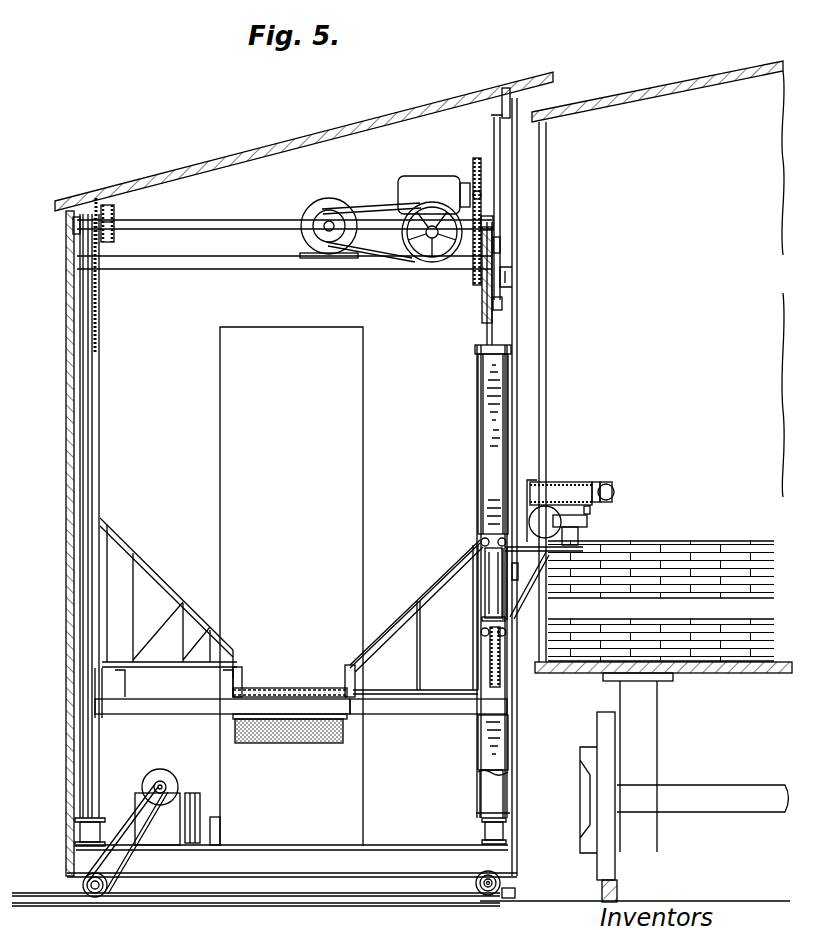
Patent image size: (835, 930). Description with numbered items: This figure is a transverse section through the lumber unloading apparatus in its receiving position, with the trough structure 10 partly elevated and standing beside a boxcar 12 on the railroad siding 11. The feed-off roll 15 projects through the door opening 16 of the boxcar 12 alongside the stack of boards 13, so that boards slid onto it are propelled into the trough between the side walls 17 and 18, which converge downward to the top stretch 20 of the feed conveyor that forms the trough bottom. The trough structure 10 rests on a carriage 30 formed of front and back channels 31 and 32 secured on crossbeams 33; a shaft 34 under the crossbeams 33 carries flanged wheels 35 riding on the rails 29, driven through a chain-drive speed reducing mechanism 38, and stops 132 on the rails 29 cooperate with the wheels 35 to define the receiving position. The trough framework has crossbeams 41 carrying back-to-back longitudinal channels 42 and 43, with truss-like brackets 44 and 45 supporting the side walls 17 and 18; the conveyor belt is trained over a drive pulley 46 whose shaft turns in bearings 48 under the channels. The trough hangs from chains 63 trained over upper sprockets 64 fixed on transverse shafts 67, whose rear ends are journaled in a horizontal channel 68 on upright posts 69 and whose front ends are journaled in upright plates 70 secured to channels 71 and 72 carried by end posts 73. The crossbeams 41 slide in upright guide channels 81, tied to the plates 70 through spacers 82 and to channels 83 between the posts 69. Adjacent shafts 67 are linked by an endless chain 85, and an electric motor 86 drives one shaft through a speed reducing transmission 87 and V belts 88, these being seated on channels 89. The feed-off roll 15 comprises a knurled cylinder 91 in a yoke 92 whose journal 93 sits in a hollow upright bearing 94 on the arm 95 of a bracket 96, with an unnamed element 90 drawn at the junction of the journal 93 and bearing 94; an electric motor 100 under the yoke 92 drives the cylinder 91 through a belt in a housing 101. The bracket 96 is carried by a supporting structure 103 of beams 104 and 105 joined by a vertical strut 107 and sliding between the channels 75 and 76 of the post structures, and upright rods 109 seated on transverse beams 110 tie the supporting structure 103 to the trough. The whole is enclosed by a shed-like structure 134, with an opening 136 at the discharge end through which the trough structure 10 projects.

The trough structure 10 is at (164, 539).
The railroad siding 11 is at (630, 896).
The boxcar 12 is at (702, 82).
The boards 13 is at (714, 546).
The feed-off roll 15 is at (603, 486).
The door opening 16 is at (546, 384).
The side wall 17 is at (118, 541).
The side wall 18 is at (443, 578).
The top stretch 20 is at (290, 680).
The rails 29 is at (197, 905).
The carriage 30 is at (53, 496).
The front channels 31 is at (507, 828).
The back channels 32 is at (75, 831).
The crossbeams 33 is at (295, 850).
The shaft 34 is at (83, 887).
The flanged wheels 35 is at (489, 896).
The chain-drive speed reducing mechanism 38 is at (130, 793).
The crossbeams 41 is at (176, 716).
The longitudinal channel 42 is at (345, 682).
The longitudinal channel 43 is at (240, 677).
The truss-like bracket 44 is at (160, 622).
The truss-like bracket 45 is at (419, 657).
The drive pulley 46 is at (236, 741).
The bearings 48 is at (233, 720).
The chains 63 is at (100, 318).
The upper sprockets 64 is at (96, 202).
The shafts 67 is at (229, 221).
The horizontal channel 68 is at (72, 227).
The upright posts 69 is at (82, 287).
The upright plates 70 is at (494, 224).
The upper channel 71 is at (505, 90).
The channel 72 is at (510, 277).
The end posts 73 is at (494, 133).
The channel 75 is at (484, 381).
The channel 76 is at (476, 350).
The upright channels 81 is at (97, 436).
The spacers 82 is at (500, 243).
The channels 83 is at (76, 304).
The endless chain 85 is at (116, 209).
The electric motor 86 is at (330, 199).
The speed reducing transmission 87 is at (412, 170).
The V belts 88 is at (385, 206).
The channels 89 is at (346, 270).
The block 90 is at (587, 522).
The cylinder 91 is at (576, 483).
The yoke 92 is at (612, 497).
The journal 93 is at (590, 510).
The hollow upright bearing 94 is at (578, 538).
The arm 95 is at (585, 549).
The bracket 96 is at (548, 606).
The electric motor 100 is at (530, 520).
The housing 101 is at (531, 483).
The supporting structure 103 is at (421, 540).
The beam 104 is at (483, 570).
The beam 105 is at (484, 620).
The vertical strut 107 is at (488, 598).
The upright rods 109 is at (490, 667).
The transverse beams 110 is at (431, 716).
The stops 132 is at (508, 891).
The shed-like structure 134 is at (209, 131).
The opening 136 is at (215, 456).